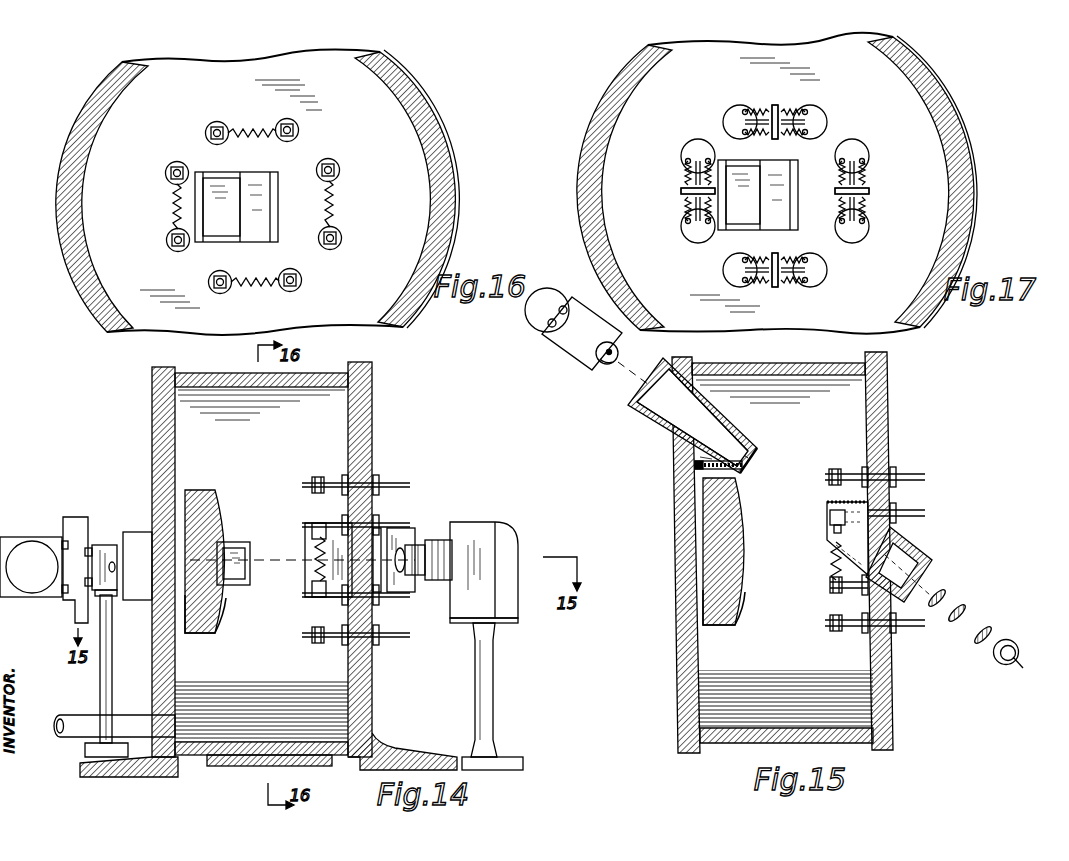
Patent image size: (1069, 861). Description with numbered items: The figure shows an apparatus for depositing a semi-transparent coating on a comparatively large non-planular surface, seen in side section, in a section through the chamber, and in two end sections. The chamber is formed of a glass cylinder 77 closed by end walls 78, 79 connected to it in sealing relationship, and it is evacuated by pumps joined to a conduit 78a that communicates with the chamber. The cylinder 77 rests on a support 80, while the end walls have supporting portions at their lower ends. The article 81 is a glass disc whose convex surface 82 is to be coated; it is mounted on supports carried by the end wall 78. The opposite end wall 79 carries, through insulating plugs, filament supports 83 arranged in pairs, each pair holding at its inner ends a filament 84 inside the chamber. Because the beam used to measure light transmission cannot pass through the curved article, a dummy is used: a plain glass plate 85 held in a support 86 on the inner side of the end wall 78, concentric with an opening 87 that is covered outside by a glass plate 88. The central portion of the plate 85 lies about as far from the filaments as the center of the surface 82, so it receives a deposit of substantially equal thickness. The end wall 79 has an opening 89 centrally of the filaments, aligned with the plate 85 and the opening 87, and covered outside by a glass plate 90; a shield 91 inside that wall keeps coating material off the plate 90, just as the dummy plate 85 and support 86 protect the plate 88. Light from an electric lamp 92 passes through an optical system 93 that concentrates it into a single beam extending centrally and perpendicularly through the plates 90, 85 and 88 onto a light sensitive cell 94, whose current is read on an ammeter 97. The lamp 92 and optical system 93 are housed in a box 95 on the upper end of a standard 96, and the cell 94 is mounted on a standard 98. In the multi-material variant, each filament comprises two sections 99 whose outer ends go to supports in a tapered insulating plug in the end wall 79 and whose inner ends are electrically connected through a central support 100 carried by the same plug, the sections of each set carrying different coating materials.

In FIG. 16, the glass cylinder 77 is at (407, 98).
In FIG. 17, the glass cylinder 77 is at (940, 95).
In FIG. 14, the glass cylinder 77 is at (318, 373).
In FIG. 15, the glass cylinder 77 is at (800, 365).
In FIG. 14, the end wall 78 is at (152, 410).
In FIG. 15, the end wall 78 is at (672, 488).
In FIG. 14, the conduit 78a is at (75, 718).
In FIG. 16, the end wall 79 is at (443, 148).
In FIG. 17, the end wall 79 is at (963, 135).
In FIG. 14, the end wall 79 is at (372, 410).
In FIG. 15, the end wall 79 is at (887, 385).
In FIG. 14, the support 80 is at (236, 766).
In FIG. 14, the article 81 is at (214, 620).
In FIG. 15, the article 81 is at (715, 628).
In FIG. 14, the convex surface 82 is at (218, 522).
In FIG. 15, the convex surface 82 is at (740, 572).
In FIG. 16, the filament supports 83 is at (318, 170).
In FIG. 14, the filament supports 83 is at (400, 488).
In FIG. 15, the filament supports 83 is at (905, 515).
In FIG. 16, the filaments 84 is at (252, 137).
In FIG. 14, the filaments 84 is at (318, 477).
In FIG. 15, the filaments 84 is at (830, 482).
In FIG. 14, the glass plate 85 is at (240, 580).
In FIG. 15, the glass plate 85 is at (760, 462).
In FIG. 14, the support 86 is at (240, 542).
In FIG. 15, the support 86 is at (730, 470).
In FIG. 15, the opening 87 is at (665, 420).
In FIG. 15, the glass plate 88 is at (640, 406).
In FIG. 16, the opening 89 is at (232, 204).
In FIG. 17, the opening 89 is at (752, 194).
In FIG. 15, the opening 89 is at (900, 535).
In FIG. 15, the glass plate 90 is at (933, 562).
In FIG. 16, the shield 91 is at (268, 200).
In FIG. 17, the shield 91 is at (787, 185).
In FIG. 14, the shield 91 is at (305, 548).
In FIG. 15, the shield 91 is at (827, 512).
In FIG. 15, the electric lamp 92 is at (1012, 645).
In FIG. 14, the optical system 93 is at (410, 545).
In FIG. 15, the optical system 93 is at (948, 600).
In FIG. 14, the light sensitive cell 94 is at (105, 545).
In FIG. 15, the light sensitive cell 94 is at (605, 365).
In FIG. 14, the box 95 is at (505, 540).
In FIG. 14, the standard 96 is at (487, 705).
In FIG. 14, the ammeter 97 is at (15, 537).
In FIG. 15, the ammeter 97 is at (532, 318).
In FIG. 14, the standard 98 is at (107, 650).
In FIG. 17, the filament sections 99 is at (762, 110).
In FIG. 17, the central support 100 is at (775, 110).